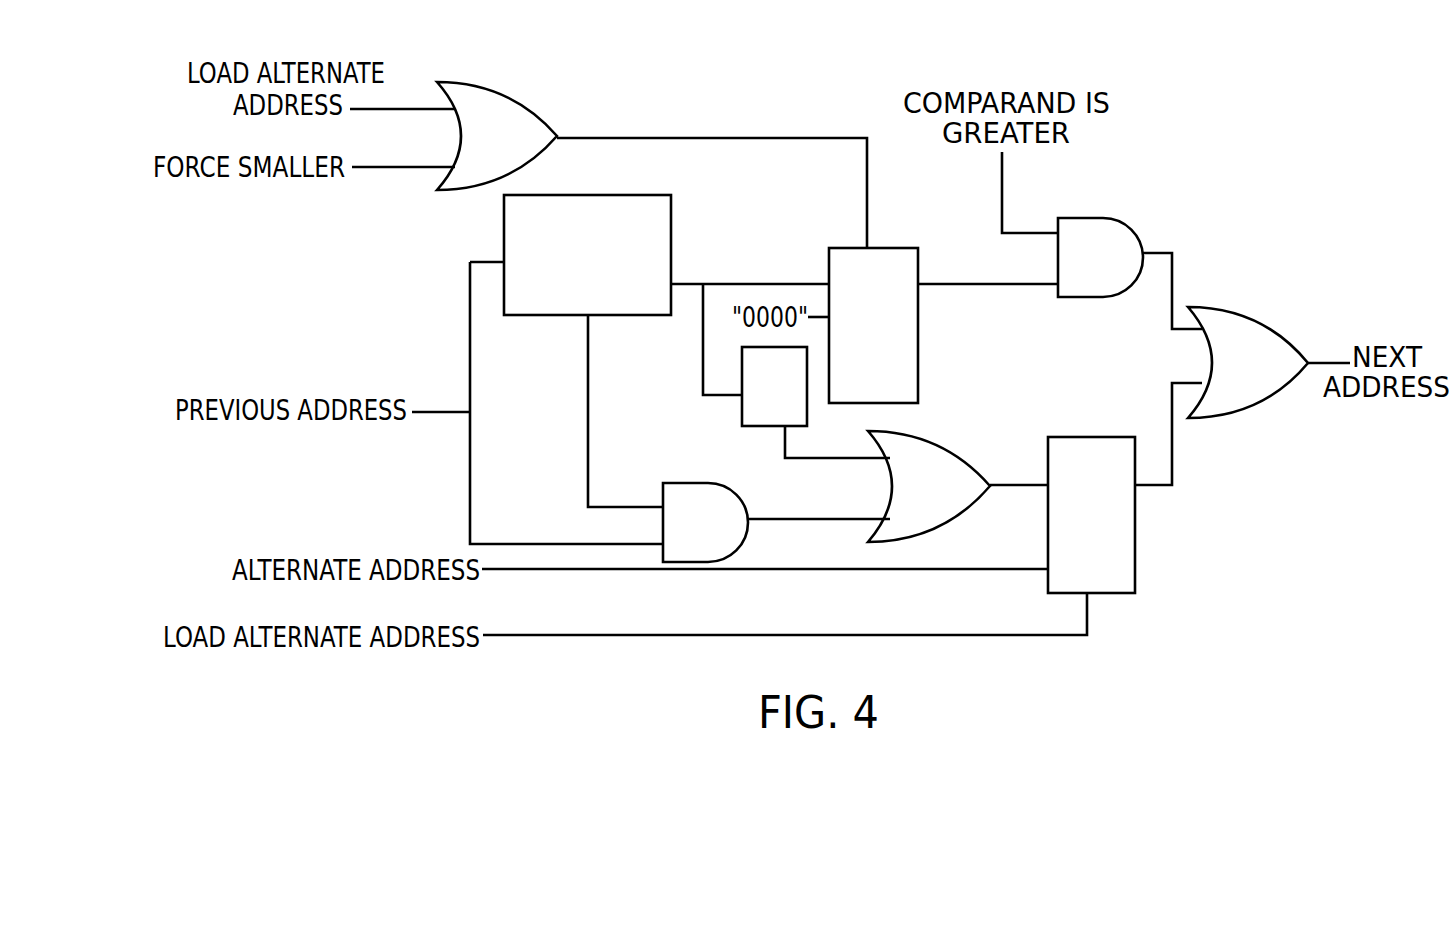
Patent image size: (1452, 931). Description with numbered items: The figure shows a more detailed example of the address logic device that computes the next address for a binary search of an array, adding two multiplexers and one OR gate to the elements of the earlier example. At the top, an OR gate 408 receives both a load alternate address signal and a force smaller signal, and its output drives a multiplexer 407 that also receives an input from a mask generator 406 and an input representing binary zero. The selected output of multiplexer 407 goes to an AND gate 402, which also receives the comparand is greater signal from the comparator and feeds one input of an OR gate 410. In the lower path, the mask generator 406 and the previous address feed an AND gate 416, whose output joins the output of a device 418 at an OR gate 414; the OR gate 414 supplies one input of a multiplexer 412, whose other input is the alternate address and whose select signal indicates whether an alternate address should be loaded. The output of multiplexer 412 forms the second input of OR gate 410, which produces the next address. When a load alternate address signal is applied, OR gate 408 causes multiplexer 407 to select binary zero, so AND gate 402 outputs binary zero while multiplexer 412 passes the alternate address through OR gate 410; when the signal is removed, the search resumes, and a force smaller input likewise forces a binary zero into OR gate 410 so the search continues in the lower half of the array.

The AND gate 402 is at (1115, 279).
The mask generator 406 is at (667, 311).
The multiplexer 407 is at (908, 400).
The OR gate 408 is at (517, 156).
The OR gate 410 is at (1268, 383).
The multiplexer 412 is at (1128, 589).
The OR gate 414 is at (946, 506).
The AND gate 416 is at (718, 543).
The constant value register 418 is at (800, 424).